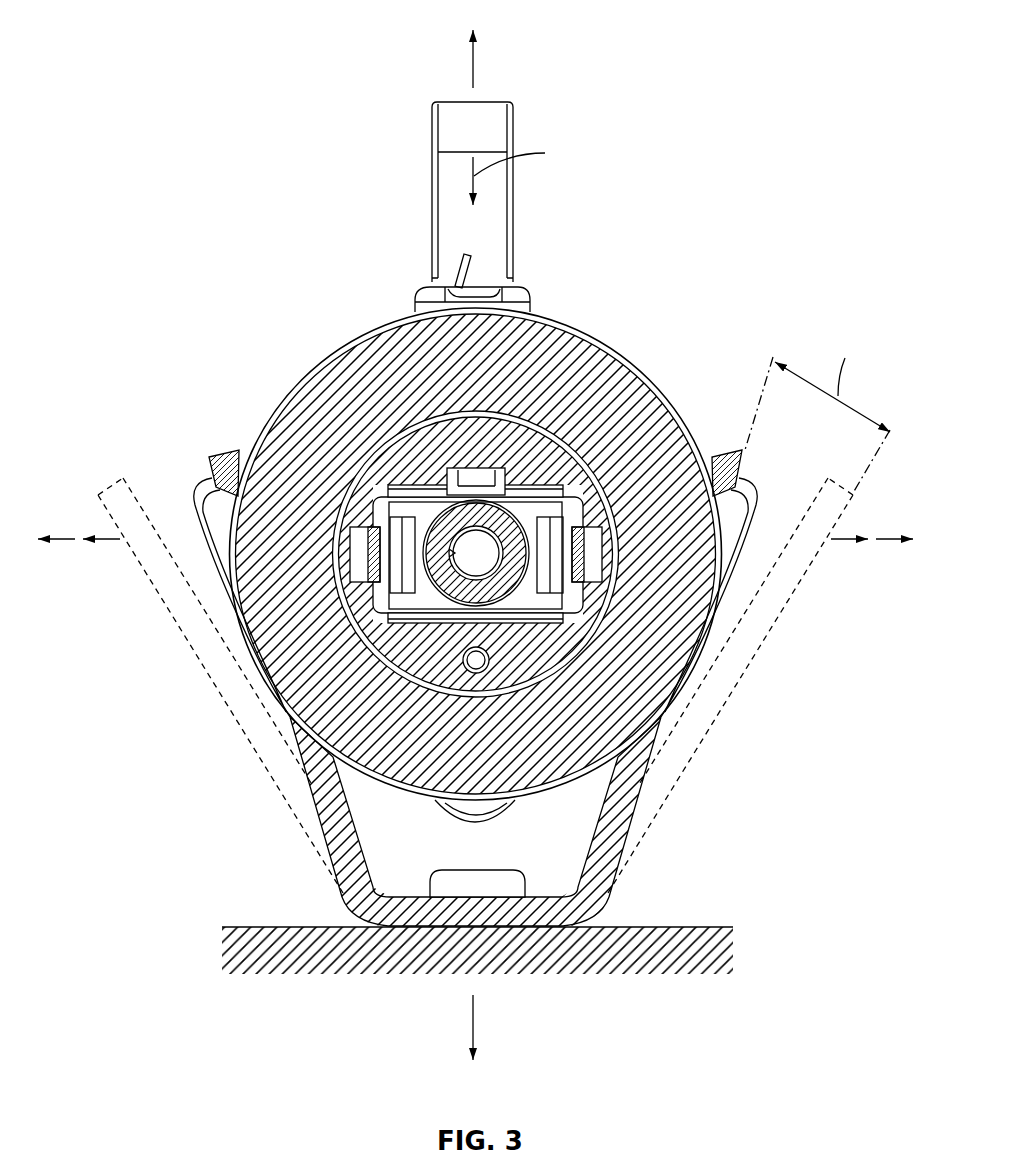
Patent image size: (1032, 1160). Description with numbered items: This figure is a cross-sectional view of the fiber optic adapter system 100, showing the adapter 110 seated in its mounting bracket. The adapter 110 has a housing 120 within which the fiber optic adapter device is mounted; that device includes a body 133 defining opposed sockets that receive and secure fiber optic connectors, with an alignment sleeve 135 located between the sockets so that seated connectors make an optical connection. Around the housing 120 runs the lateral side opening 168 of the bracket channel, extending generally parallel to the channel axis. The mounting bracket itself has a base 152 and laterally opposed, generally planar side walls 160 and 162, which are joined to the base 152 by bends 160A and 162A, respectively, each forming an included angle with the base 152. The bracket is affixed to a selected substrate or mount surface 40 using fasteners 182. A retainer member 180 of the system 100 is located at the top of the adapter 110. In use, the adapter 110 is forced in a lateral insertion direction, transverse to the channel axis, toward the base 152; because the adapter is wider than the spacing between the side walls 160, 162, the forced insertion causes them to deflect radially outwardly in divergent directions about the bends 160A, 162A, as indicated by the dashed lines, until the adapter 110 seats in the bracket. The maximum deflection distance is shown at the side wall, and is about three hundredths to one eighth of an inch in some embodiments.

The fiber optic adapter system 100 is at (225, 87).
The adapter 110 is at (598, 331).
The housing 120 is at (347, 368).
The body 133 is at (528, 485).
The alignment sleeve 135 is at (453, 578).
The base 152 is at (480, 913).
The side wall 160 is at (620, 799).
The bend 160A is at (587, 908).
The side wall 162 is at (332, 797).
The bend 162A is at (357, 910).
The lateral side opening 168 is at (645, 368).
The retainer member 180 is at (512, 296).
The fastener 182 is at (447, 883).
The mount surface 40 is at (703, 927).